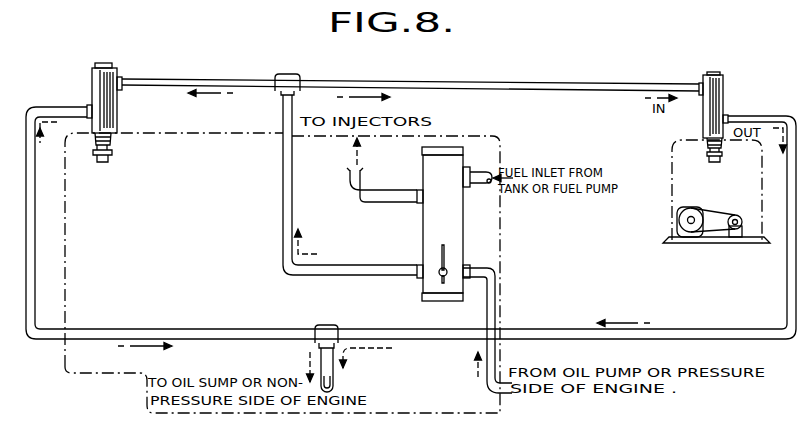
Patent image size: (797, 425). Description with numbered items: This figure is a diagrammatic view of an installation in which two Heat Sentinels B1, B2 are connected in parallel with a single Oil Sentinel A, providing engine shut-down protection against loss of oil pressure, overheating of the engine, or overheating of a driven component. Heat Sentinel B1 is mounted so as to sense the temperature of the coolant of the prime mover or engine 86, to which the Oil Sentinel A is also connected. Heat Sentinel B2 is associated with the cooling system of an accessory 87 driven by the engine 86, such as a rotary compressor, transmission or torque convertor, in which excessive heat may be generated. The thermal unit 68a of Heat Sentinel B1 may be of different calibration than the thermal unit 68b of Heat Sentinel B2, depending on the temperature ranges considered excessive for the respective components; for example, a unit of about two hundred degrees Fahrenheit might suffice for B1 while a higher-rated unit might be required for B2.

The Heat Sentinel B1 is at (90, 81).
The Heat Sentinel B2 is at (727, 97).
The thermal unit 68a is at (110, 157).
The thermal unit 68b is at (705, 157).
The prime mover or engine 86 is at (193, 218).
The accessory 87 is at (668, 200).
The Oil Sentinel A is at (416, 228).